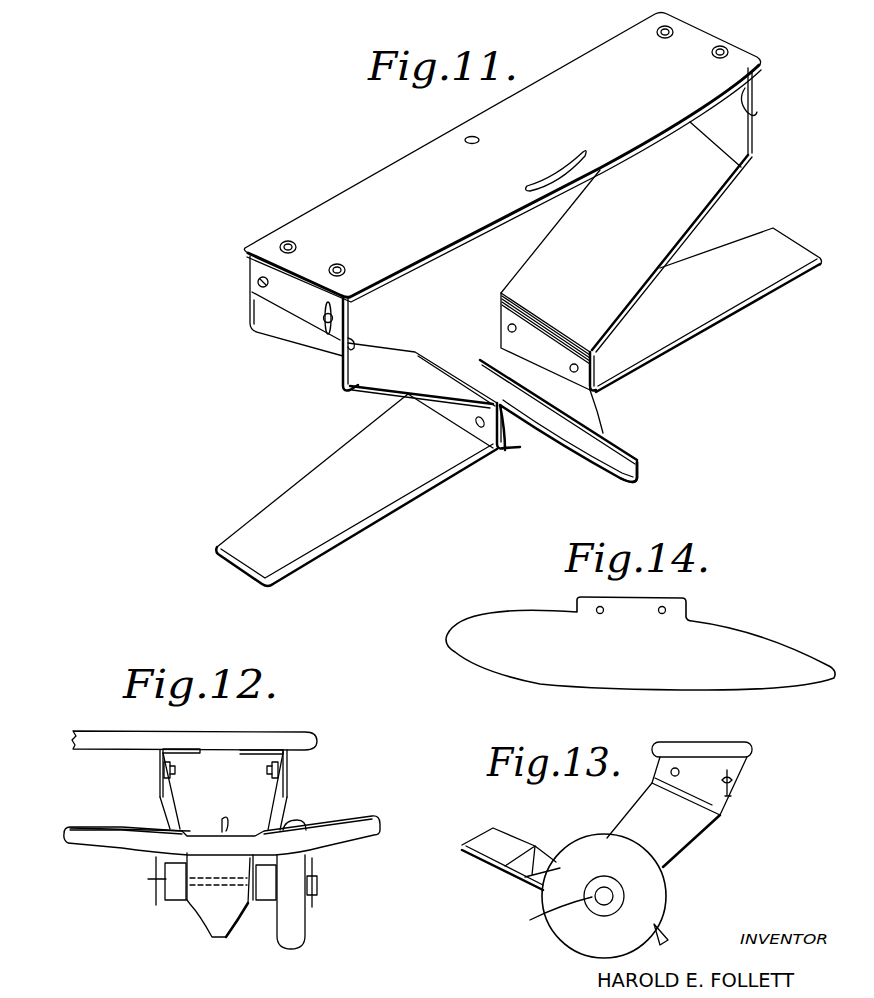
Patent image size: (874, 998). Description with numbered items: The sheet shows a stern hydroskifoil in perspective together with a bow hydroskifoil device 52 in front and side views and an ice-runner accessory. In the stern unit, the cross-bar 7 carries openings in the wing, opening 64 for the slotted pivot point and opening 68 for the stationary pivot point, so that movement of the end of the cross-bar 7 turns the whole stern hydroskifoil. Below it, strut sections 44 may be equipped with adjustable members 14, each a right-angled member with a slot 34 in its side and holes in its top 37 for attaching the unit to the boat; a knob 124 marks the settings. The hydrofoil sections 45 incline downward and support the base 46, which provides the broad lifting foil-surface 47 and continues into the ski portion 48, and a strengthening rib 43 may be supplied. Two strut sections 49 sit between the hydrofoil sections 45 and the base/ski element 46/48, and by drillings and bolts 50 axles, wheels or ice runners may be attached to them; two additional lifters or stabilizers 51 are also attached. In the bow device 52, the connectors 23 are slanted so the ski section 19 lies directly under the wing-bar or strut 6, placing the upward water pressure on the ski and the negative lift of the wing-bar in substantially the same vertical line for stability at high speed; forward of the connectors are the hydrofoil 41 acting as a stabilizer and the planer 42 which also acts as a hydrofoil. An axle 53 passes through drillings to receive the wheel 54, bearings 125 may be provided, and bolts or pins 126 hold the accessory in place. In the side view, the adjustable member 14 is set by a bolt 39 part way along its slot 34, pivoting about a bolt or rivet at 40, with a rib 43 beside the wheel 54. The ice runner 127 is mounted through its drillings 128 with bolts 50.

In FIG. 11, the cross-bar 7 is at (372, 186).
In FIG. 11, the opening for stationary pivot point 68 is at (474, 144).
In FIG. 11, the wing opening for slotted pivot point 64 is at (556, 182).
In FIG. 11, the adjustable member 14 is at (277, 296).
In FIG. 12, the adjustable member 14 is at (288, 767).
In FIG. 13, the adjustable member 14 is at (703, 785).
In FIG. 11, the strut section 44 is at (258, 315).
In FIG. 11, the hydrofoil section 45 is at (350, 385).
In FIG. 11, the knob 124 is at (348, 346).
In FIG. 11, the support base 46 is at (498, 348).
In FIG. 11, the foil-surface 47 is at (452, 366).
In FIG. 11, the bolts 50 is at (477, 424).
In FIG. 11, the strut sections 49 is at (500, 452).
In FIG. 11, the lifters or stabilizers 51 is at (370, 510).
In FIG. 11, the rib 43 is at (558, 428).
In FIG. 12, the rib 43 is at (236, 817).
In FIG. 13, the rib 43 is at (535, 850).
In FIG. 11, the ski portion 48 is at (622, 486).
In FIG. 14, the ice runner 127 is at (738, 640).
In FIG. 14, the drillings 128 is at (659, 613).
In FIG. 12, the wing-bar or strut 6 is at (288, 741).
In FIG. 13, the wing-bar or strut 6 is at (753, 750).
In FIG. 12, the top of adjustable member 37 is at (252, 748).
In FIG. 12, the hydroskifoil device 52 is at (152, 772).
In FIG. 12, the connector or strut 23 is at (160, 812).
In FIG. 13, the connector or strut 23 is at (668, 825).
In FIG. 12, the hydrofoil 41 is at (344, 832).
In FIG. 13, the hydrofoil 41 is at (500, 866).
In FIG. 12, the planer 42 is at (110, 849).
In FIG. 12, the axle 53 is at (212, 883).
In FIG. 13, the axle 53 is at (553, 921).
In FIG. 12, the ski section 19 is at (216, 938).
In FIG. 13, the ski section 19 is at (666, 944).
In FIG. 12, the bearings 125 is at (267, 900).
In FIG. 13, the bearings 125 is at (595, 884).
In FIG. 12, the roller wheel 54 is at (305, 925).
In FIG. 13, the roller wheel 54 is at (655, 897).
In FIG. 12, the bolts or pins 126 is at (318, 868).
In FIG. 13, the bolt or rivet pivot 40 is at (670, 772).
In FIG. 13, the slot 34 is at (735, 787).
In FIG. 13, the bolt 39 is at (733, 797).